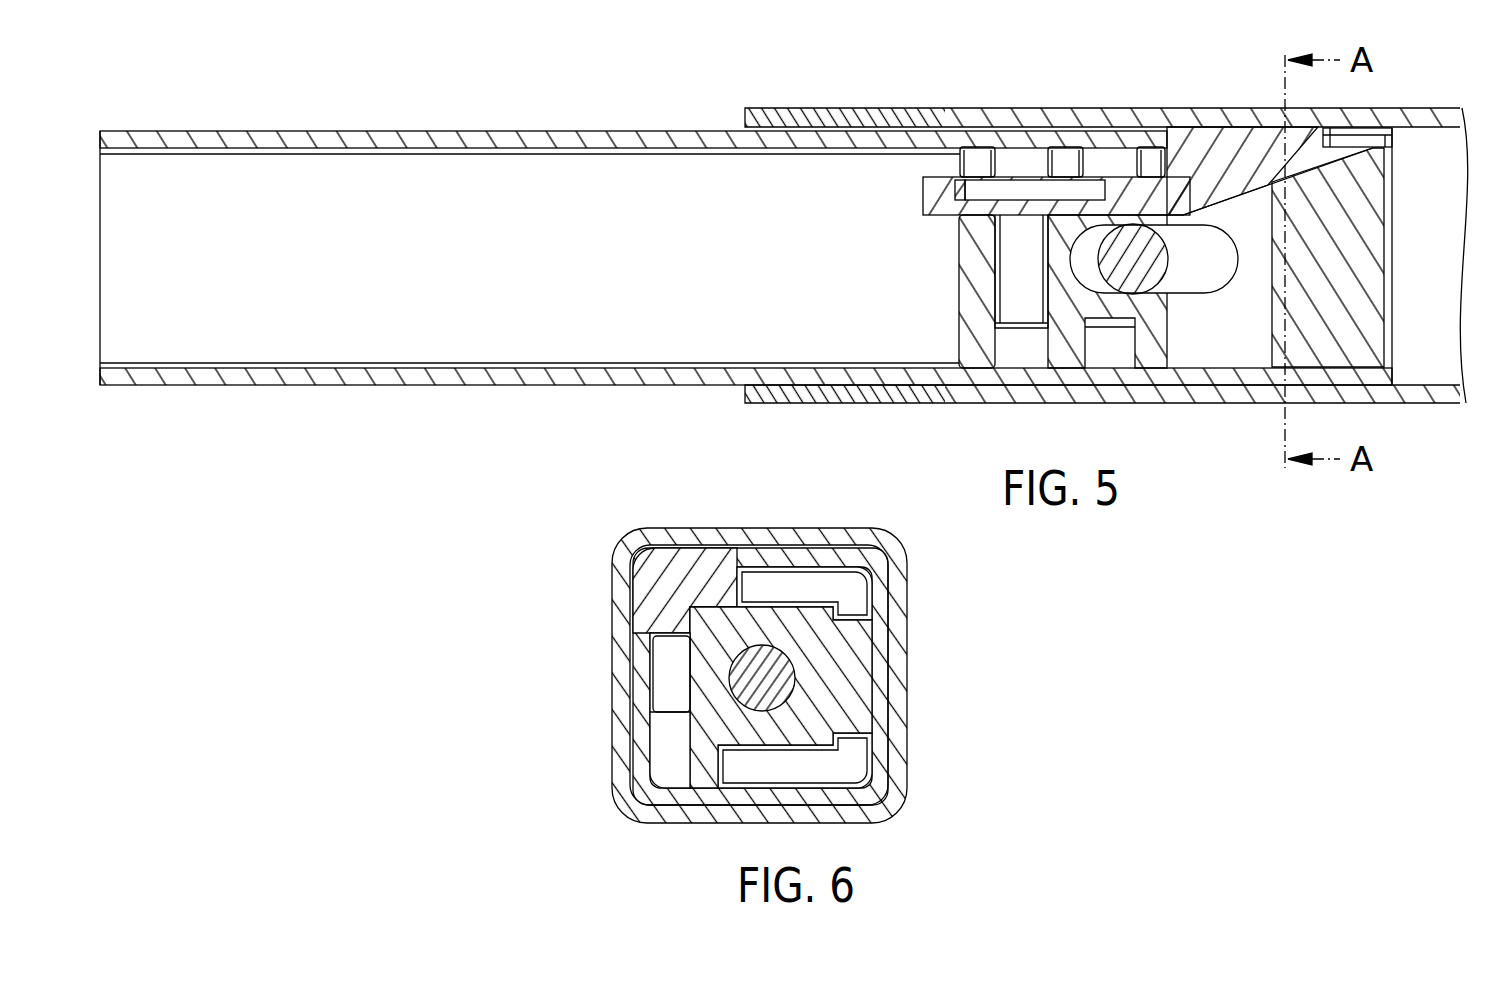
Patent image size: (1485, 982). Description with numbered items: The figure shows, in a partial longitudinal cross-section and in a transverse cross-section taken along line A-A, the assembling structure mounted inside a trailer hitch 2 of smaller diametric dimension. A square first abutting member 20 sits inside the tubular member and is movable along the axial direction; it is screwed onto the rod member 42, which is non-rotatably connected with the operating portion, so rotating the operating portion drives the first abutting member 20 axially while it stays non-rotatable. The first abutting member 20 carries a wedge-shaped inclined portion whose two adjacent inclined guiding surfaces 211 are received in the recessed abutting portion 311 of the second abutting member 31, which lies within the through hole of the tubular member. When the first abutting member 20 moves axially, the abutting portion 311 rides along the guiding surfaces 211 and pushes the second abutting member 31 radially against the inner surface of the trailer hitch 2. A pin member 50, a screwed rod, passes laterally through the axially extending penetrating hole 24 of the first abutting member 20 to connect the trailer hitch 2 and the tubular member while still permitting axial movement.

In FIG. 5, the trailer hitch 2 is at (888, 120).
In FIG. 6, the trailer hitch 2 is at (620, 733).
In FIG. 5, the penetrating hole 24 is at (1201, 247).
In FIG. 5, the pin member 50 is at (1140, 272).
In FIG. 6, the second abutting member 31 is at (657, 585).
In FIG. 6, the abutting portion 311 is at (708, 607).
In FIG. 6, the inclined guiding surfaces 211 is at (710, 610).
In FIG. 6, the rod member 42 is at (777, 677).
In FIG. 6, the first abutting member 20 is at (820, 710).